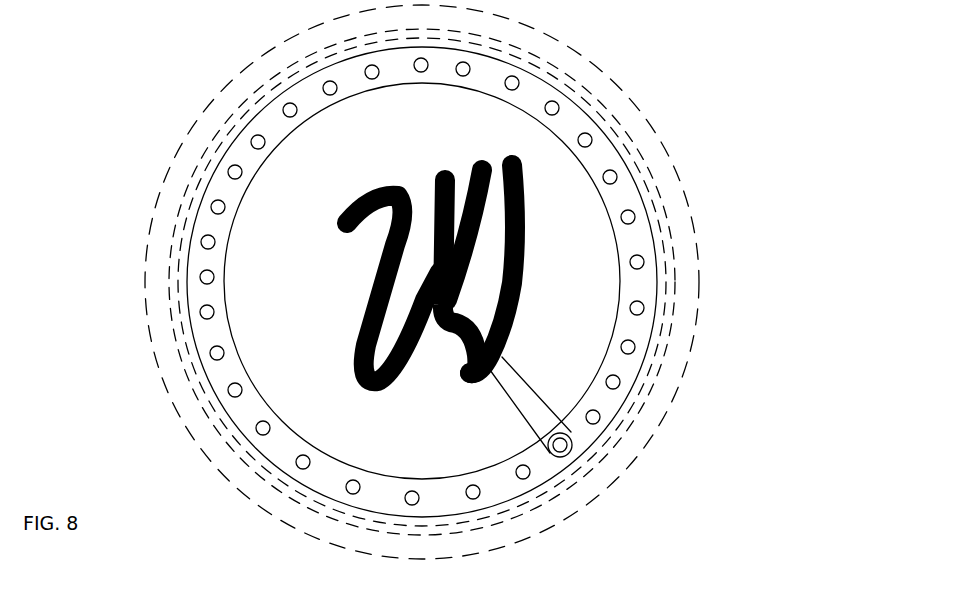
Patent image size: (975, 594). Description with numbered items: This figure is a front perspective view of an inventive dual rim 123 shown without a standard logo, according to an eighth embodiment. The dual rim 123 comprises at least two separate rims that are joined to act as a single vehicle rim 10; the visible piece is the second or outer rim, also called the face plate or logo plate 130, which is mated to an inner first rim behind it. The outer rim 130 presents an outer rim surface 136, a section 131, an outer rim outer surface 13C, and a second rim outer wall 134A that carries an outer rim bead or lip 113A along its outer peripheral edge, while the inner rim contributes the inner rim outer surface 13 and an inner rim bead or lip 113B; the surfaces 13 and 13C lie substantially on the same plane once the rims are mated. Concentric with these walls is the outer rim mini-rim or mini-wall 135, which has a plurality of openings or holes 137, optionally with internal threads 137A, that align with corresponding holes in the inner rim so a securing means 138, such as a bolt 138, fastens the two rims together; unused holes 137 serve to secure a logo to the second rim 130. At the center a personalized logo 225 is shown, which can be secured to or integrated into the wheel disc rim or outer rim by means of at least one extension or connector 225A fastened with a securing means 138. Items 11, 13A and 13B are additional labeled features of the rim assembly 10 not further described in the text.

The single vehicle rim 10 is at (678, 396).
The inner frame 11 is at (268, 158).
The inner rim outer surface 13 is at (304, 114).
The frame layer 13A is at (699, 309).
The frame layer 13B is at (694, 349).
The outer rim outer surface 13C is at (681, 287).
The outer rim bead 113A is at (676, 172).
The inner rim bead 113B is at (693, 212).
The second rim 130 is at (652, 132).
The section 131 is at (681, 258).
The second rim outer wall 134A is at (584, 66).
The outer rim mini-wall 135 is at (225, 188).
The outer rim surface 136 is at (623, 99).
The holes 137 is at (214, 312).
The internal threads 137A is at (220, 211).
The securing means 138 is at (240, 386).
The personalized logo 225 is at (517, 320).
The extension or connector 225A is at (533, 407).
The dual rim 123 is at (814, 40).